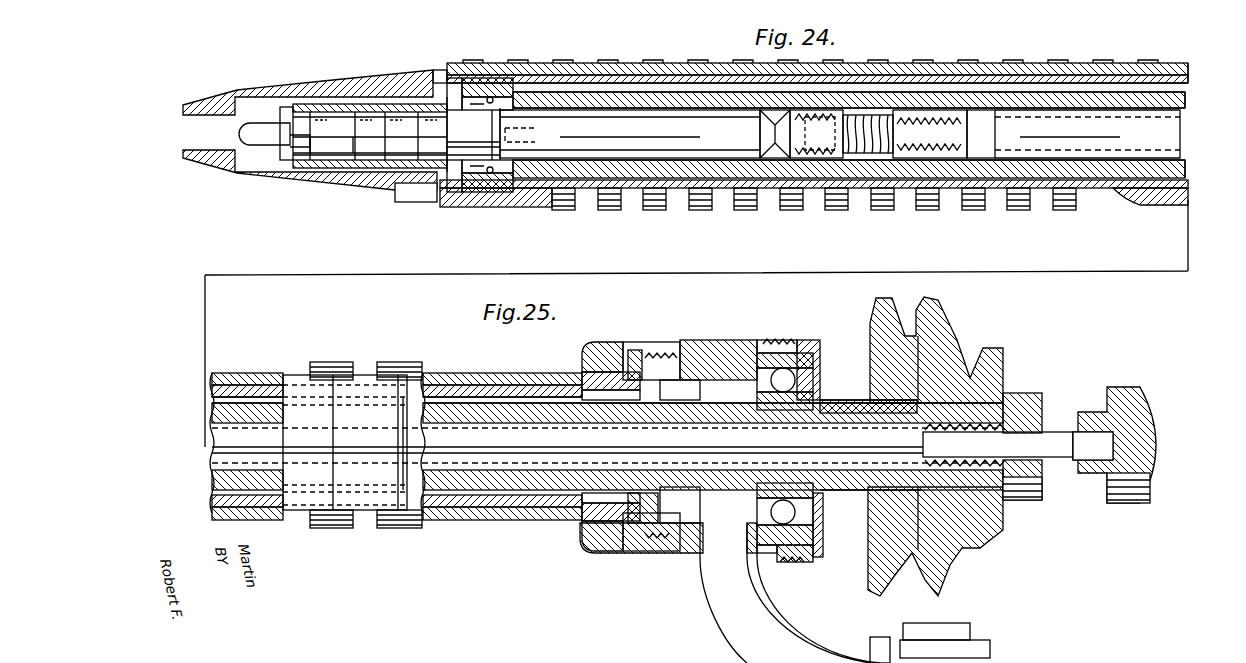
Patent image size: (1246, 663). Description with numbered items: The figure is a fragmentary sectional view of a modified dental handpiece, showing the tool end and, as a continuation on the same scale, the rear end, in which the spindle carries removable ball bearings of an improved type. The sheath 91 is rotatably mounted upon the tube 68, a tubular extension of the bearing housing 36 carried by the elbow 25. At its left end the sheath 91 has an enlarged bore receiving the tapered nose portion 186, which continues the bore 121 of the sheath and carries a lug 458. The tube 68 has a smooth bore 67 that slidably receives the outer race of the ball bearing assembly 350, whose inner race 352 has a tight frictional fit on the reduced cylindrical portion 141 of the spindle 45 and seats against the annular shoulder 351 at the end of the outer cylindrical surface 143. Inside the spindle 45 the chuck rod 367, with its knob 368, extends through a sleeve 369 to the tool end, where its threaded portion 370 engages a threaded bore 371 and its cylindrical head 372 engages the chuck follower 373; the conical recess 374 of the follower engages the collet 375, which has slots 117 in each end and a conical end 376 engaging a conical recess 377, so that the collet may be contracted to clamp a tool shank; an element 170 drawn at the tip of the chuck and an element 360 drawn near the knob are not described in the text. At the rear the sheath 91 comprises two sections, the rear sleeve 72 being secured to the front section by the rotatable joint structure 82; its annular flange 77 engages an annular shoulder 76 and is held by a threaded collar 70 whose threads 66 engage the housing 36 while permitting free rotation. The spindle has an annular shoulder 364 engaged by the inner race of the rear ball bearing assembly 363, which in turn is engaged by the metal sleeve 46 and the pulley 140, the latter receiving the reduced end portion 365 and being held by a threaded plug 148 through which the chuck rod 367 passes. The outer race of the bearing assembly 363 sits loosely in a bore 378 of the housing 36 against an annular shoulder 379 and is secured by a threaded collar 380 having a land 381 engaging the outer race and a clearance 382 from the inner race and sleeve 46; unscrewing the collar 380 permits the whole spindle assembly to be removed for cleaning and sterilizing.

In FIG. 24, the tapered nose portion 186 is at (375, 75).
In FIG. 24, the lug 458 is at (412, 196).
In FIG. 24, the plunger 170 is at (256, 131).
In FIG. 24, the conical recess 377 is at (297, 158).
In FIG. 24, the conical end 376 is at (298, 116).
In FIG. 24, the collet 375 is at (401, 120).
In FIG. 24, the slots 117 is at (327, 158).
In FIG. 24, the reduced cylindrical portion 141 is at (468, 112).
In FIG. 24, the ball bearing assembly 350 is at (527, 96).
In FIG. 24, the annular shoulder 351 is at (547, 96).
In FIG. 24, the inner race 352 is at (473, 134).
In FIG. 24, the tube 68 is at (953, 77).
In FIG. 25, the tube 68 is at (475, 390).
In FIG. 24, the sheath 91 is at (886, 61).
In FIG. 24, the bore 121 is at (627, 82).
In FIG. 24, the smooth bore 67 is at (680, 88).
In FIG. 24, the outer cylindrical surface 143 is at (722, 97).
In FIG. 25, the outer cylindrical surface 143 is at (543, 408).
In FIG. 24, the spindle 45 is at (580, 98).
In FIG. 24, the chuck follower 373 is at (730, 136).
In FIG. 24, the conical recess 374 is at (573, 132).
In FIG. 24, the cylindrical head 372 is at (800, 155).
In FIG. 24, the threaded portion 370 is at (873, 152).
In FIG. 24, the threaded bore 371 is at (937, 150).
In FIG. 24, the sleeve 369 is at (1181, 131).
In FIG. 25, the sleeve 369 is at (896, 470).
In FIG. 25, the rotatable joint structure 82 is at (370, 357).
In FIG. 25, the sleeve 72 is at (521, 380).
In FIG. 25, the threaded collar 70 is at (603, 342).
In FIG. 25, the annular flange 77 is at (641, 352).
In FIG. 25, the threads 66 is at (684, 357).
In FIG. 25, the annular shoulder 76 is at (680, 451).
In FIG. 25, the bearing housing 36 is at (743, 336).
In FIG. 25, the ball bearing assembly 363 is at (757, 385).
In FIG. 25, the annular shoulder 364 is at (755, 390).
In FIG. 25, the annular shoulder 379 is at (773, 343).
In FIG. 25, the bore 378 is at (802, 338).
In FIG. 25, the threaded collar 380 is at (815, 560).
In FIG. 25, the land 381 is at (808, 530).
In FIG. 25, the clearance 382 is at (813, 508).
In FIG. 25, the metal sleeve 46 is at (858, 403).
In FIG. 25, the reduced end portion 365 is at (847, 403).
In FIG. 25, the pulley 140 is at (967, 343).
In FIG. 25, the threaded plug 148 is at (1037, 386).
In FIG. 25, the chuck rod 367 is at (1058, 431).
In FIG. 25, the threaded end 360 is at (1048, 458).
In FIG. 25, the knob 368 is at (1133, 395).
In FIG. 25, the elbow 25 is at (730, 615).